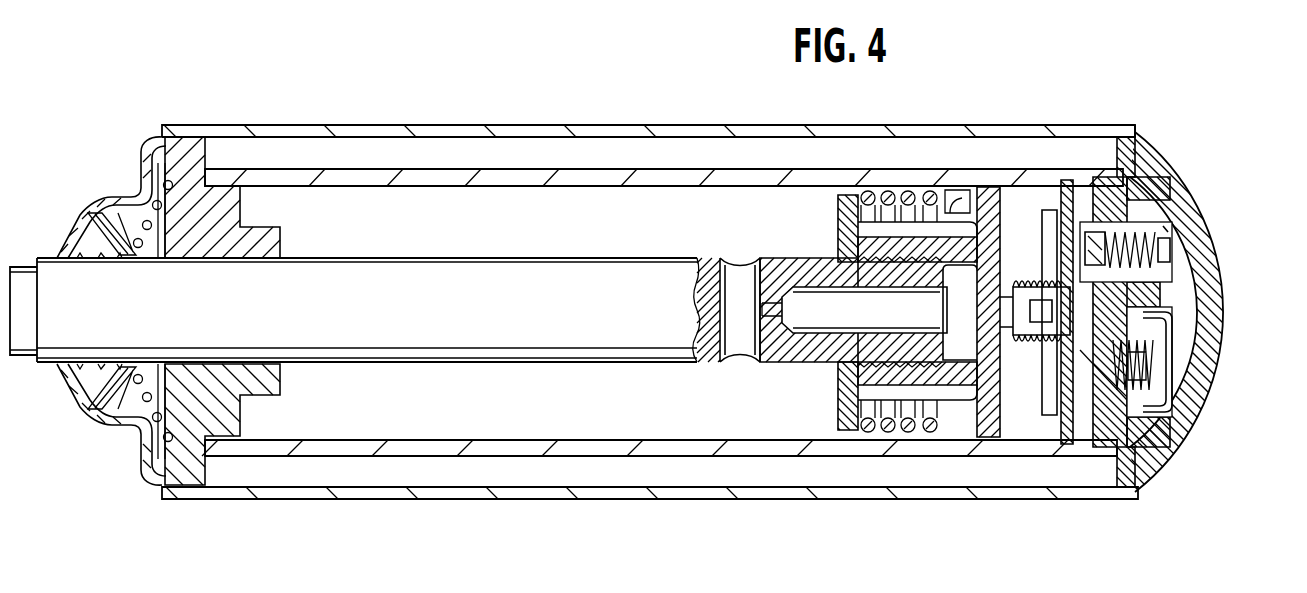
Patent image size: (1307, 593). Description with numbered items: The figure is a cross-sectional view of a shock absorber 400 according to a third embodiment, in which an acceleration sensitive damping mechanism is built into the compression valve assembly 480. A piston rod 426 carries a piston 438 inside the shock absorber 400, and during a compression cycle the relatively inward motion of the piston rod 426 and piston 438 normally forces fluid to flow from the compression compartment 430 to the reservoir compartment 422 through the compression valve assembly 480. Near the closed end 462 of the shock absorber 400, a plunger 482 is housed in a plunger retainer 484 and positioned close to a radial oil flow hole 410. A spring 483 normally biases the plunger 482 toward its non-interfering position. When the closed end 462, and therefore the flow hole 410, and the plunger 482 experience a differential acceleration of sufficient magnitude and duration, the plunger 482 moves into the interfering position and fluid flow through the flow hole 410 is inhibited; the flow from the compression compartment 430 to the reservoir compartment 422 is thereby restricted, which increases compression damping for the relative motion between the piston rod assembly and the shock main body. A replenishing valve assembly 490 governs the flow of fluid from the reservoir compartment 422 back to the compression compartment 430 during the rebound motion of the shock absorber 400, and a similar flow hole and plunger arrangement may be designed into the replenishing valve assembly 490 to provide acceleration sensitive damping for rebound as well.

The shock absorber 400 is at (547, 96).
The piston 438 is at (627, 257).
The plunger retainer 484 is at (1103, 240).
The plunger 482 is at (1078, 186).
The closed end 462 is at (1165, 133).
The spring 483 is at (1152, 205).
The compression valve assembly 480 is at (1172, 228).
The radial oil flow hole 410 is at (1138, 293).
The replenishing valve assembly 490 is at (1158, 398).
The compression compartment 430 is at (1157, 453).
The reservoir compartment 422 is at (1105, 473).
The piston rod 426 is at (993, 410).